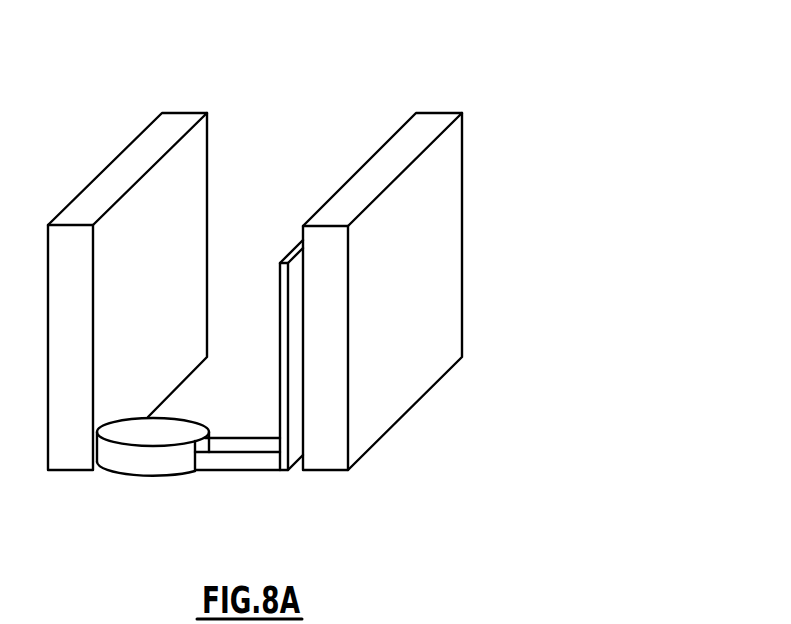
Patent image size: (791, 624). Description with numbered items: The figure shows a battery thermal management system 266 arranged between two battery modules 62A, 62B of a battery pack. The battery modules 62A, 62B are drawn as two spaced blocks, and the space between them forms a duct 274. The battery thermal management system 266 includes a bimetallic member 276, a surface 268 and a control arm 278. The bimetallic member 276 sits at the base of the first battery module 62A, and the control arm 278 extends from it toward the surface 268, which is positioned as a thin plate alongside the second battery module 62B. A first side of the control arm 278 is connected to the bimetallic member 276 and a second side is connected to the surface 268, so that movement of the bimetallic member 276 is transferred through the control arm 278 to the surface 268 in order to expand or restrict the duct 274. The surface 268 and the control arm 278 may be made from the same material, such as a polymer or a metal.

The battery thermal management system 266 is at (355, 76).
The battery module 62A is at (110, 192).
The battery module 62B is at (445, 247).
The duct 274 is at (295, 157).
The bimetallic member 276 is at (142, 463).
The control arm 278 is at (245, 460).
The surface 268 is at (297, 430).